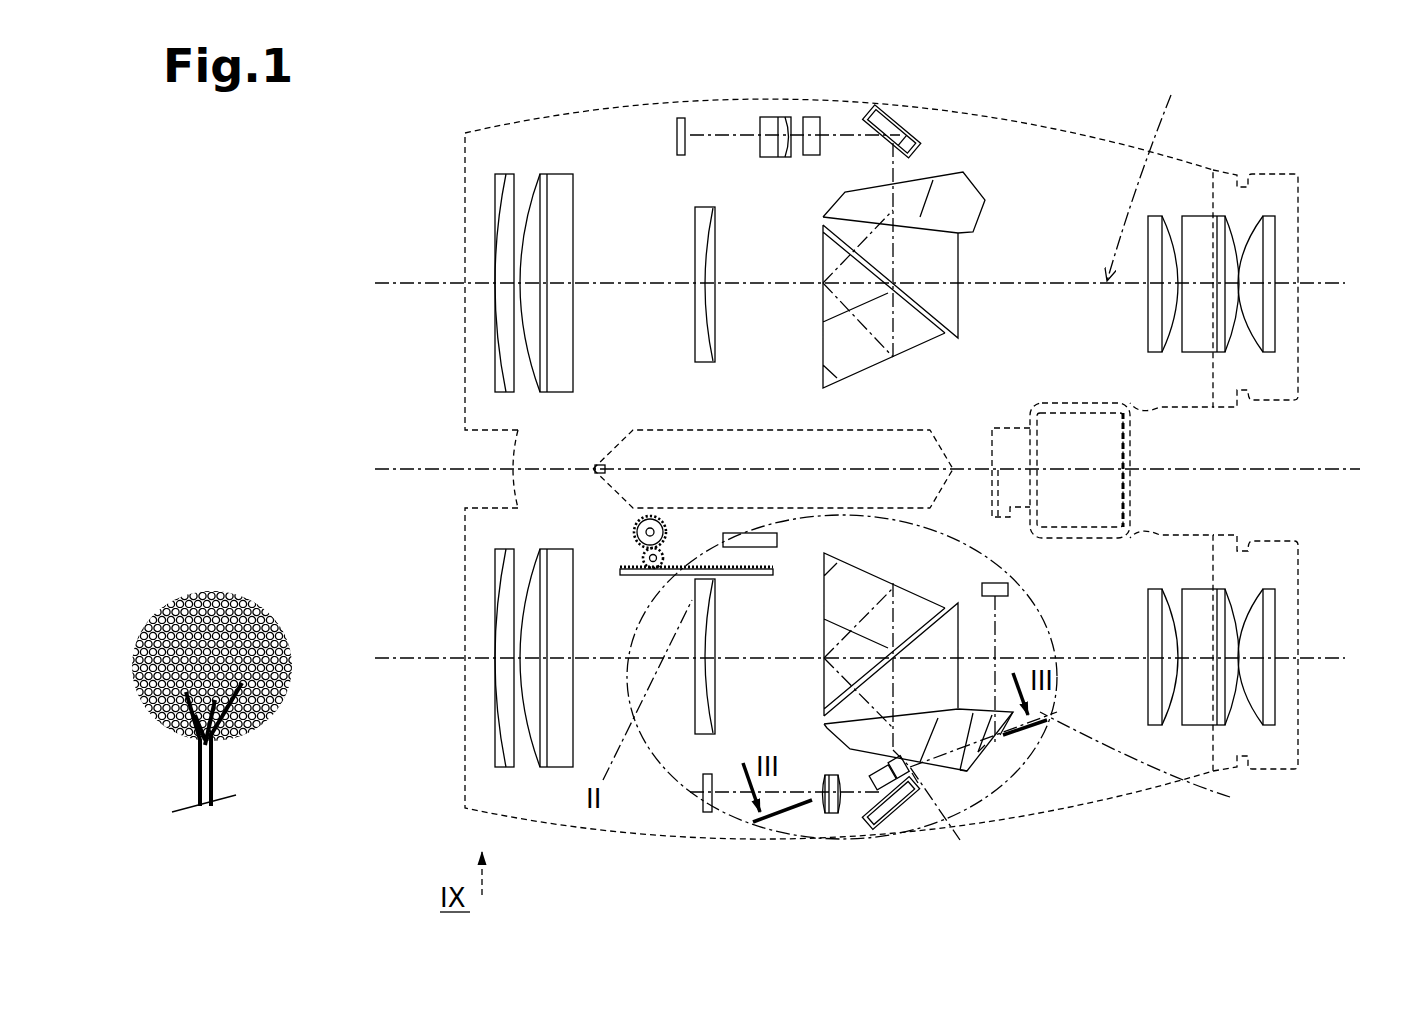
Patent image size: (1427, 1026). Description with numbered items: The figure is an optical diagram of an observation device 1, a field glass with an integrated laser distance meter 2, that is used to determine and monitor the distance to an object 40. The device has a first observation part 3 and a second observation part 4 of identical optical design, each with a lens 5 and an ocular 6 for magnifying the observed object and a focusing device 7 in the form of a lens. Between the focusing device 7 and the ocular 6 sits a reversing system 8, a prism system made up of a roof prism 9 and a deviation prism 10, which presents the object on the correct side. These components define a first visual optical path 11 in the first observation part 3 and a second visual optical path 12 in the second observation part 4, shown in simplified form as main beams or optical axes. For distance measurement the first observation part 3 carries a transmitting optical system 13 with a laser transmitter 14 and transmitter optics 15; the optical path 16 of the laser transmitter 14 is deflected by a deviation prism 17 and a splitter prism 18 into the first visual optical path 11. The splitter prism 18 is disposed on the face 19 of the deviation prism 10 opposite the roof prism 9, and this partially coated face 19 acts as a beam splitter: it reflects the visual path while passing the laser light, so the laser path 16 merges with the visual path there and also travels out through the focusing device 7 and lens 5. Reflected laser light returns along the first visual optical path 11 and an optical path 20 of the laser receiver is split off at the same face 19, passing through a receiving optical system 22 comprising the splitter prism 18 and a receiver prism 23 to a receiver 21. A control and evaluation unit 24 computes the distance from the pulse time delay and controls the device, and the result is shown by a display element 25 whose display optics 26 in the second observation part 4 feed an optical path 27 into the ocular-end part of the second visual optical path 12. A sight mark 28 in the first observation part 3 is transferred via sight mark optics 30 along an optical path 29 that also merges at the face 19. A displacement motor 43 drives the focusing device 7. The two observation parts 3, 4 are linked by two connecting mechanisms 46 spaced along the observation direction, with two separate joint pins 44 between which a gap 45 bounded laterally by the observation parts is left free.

The observation device 1 is at (780, 466).
The laser distance meter 2 is at (925, 835).
The first observation part 3 is at (1095, 824).
The second observation part 4 is at (1106, 124).
The lens 5 is at (459, 240).
The ocular 6 is at (1265, 561).
The focusing device 7 is at (706, 735).
The reversing system 8 is at (1027, 666).
The roof prism 9 is at (843, 593).
The deviation prism 10 is at (800, 795).
The first visual optical path 11 is at (1155, 765).
The second visual optical path 12 is at (1159, 171).
The transmitting optical system 13 is at (1001, 808).
The laser transmitter 14 is at (895, 828).
The transmitter optics 15 is at (982, 779).
The optical path of the laser transmitter 16 is at (935, 795).
The deviation prism 17 is at (992, 765).
The splitter prism 18 is at (942, 845).
The face 19 is at (855, 775).
The optical path of the laser receiver 20 is at (997, 631).
The receiver 21 is at (976, 580).
The receiving optical system 22 is at (1040, 737).
The receiver prism 23 is at (993, 723).
The control and evaluation unit 24 is at (781, 549).
The display element 25 is at (678, 110).
The display optics 26 is at (855, 128).
The optical path of the display optics 27 is at (841, 133).
The sight mark 28 is at (706, 812).
The optical path of the sight mark 29 is at (745, 795).
The sight mark optics 30 is at (838, 826).
The object 40 is at (184, 556).
The displacement motor 43 is at (586, 532).
The joint pins 44 is at (540, 468).
The gap 45 is at (688, 449).
The connecting mechanisms 46 is at (454, 446).